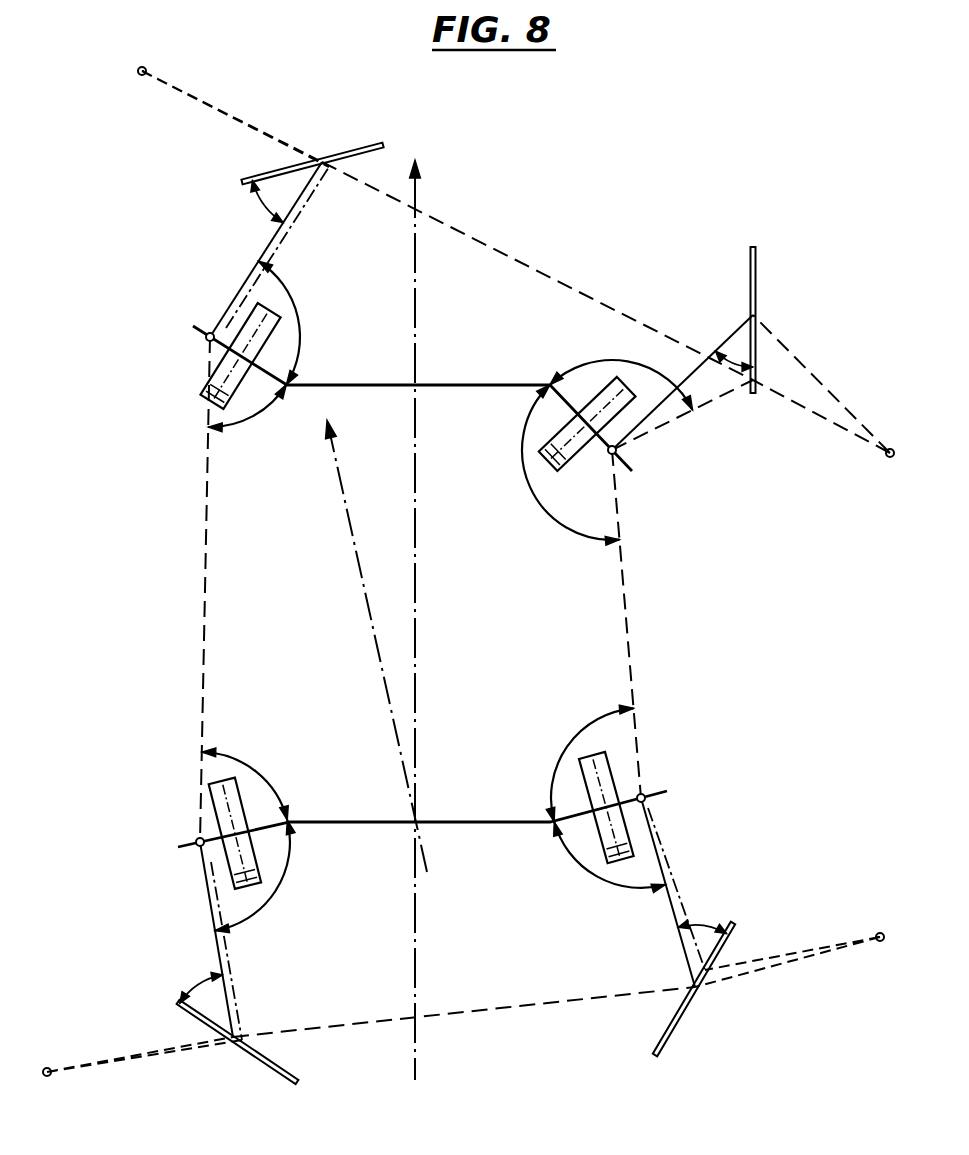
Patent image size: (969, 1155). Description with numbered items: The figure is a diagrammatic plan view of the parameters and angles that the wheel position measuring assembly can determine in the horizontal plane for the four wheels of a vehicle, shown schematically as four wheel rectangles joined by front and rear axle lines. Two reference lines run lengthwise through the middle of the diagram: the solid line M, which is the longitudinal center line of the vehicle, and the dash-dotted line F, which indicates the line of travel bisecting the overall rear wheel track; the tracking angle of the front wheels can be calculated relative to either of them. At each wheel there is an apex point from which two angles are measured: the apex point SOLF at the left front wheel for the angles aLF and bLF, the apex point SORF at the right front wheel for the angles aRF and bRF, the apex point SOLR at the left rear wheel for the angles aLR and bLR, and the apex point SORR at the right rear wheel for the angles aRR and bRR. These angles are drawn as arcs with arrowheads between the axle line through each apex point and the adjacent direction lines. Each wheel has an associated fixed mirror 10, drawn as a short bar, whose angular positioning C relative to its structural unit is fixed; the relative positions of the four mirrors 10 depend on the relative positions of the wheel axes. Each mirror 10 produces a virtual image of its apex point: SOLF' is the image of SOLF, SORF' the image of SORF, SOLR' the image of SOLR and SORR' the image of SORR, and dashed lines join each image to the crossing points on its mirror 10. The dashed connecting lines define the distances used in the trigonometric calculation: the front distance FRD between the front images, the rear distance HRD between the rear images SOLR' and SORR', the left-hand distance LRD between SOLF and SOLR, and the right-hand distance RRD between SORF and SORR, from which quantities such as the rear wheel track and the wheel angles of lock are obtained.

The fixed mirror 10 is at (366, 150).
The longitudinal center line of the vehicle M is at (417, 555).
The line of travel F is at (357, 572).
The front distance FRD is at (537, 271).
The rear distance between virtual images HRD is at (464, 1006).
The left-hand distance LRD is at (196, 589).
The right-hand distance RRD is at (634, 624).
The angular positioning of the mirrors C is at (466, 591).
The apex point of angles aLF and bLF SOLF is at (170, 349).
The apex point of angles aRF and bRF SORF is at (656, 457).
The apex point of angles aLR and bLR SOLR is at (158, 831).
The apex point of angles aRR and bRR SORR is at (684, 811).
The image of apex point SOLF SOLF' is at (233, 102).
The image of apex point SORF SORF' is at (823, 405).
The image of apex point SOLR SOLR' is at (142, 1050).
The image of apex point SORR SORR' is at (789, 968).
The measured angle at left front aLF is at (247, 412).
The measured angle at left front bLF is at (300, 322).
The measured angle at right front aRF is at (548, 465).
The measured angle at right front bRF is at (621, 374).
The measured angle at left rear aLR is at (252, 784).
The measured angle at left rear bLR is at (268, 876).
The measured angle at right rear aRR is at (578, 763).
The measured angle at right rear bRR is at (604, 857).